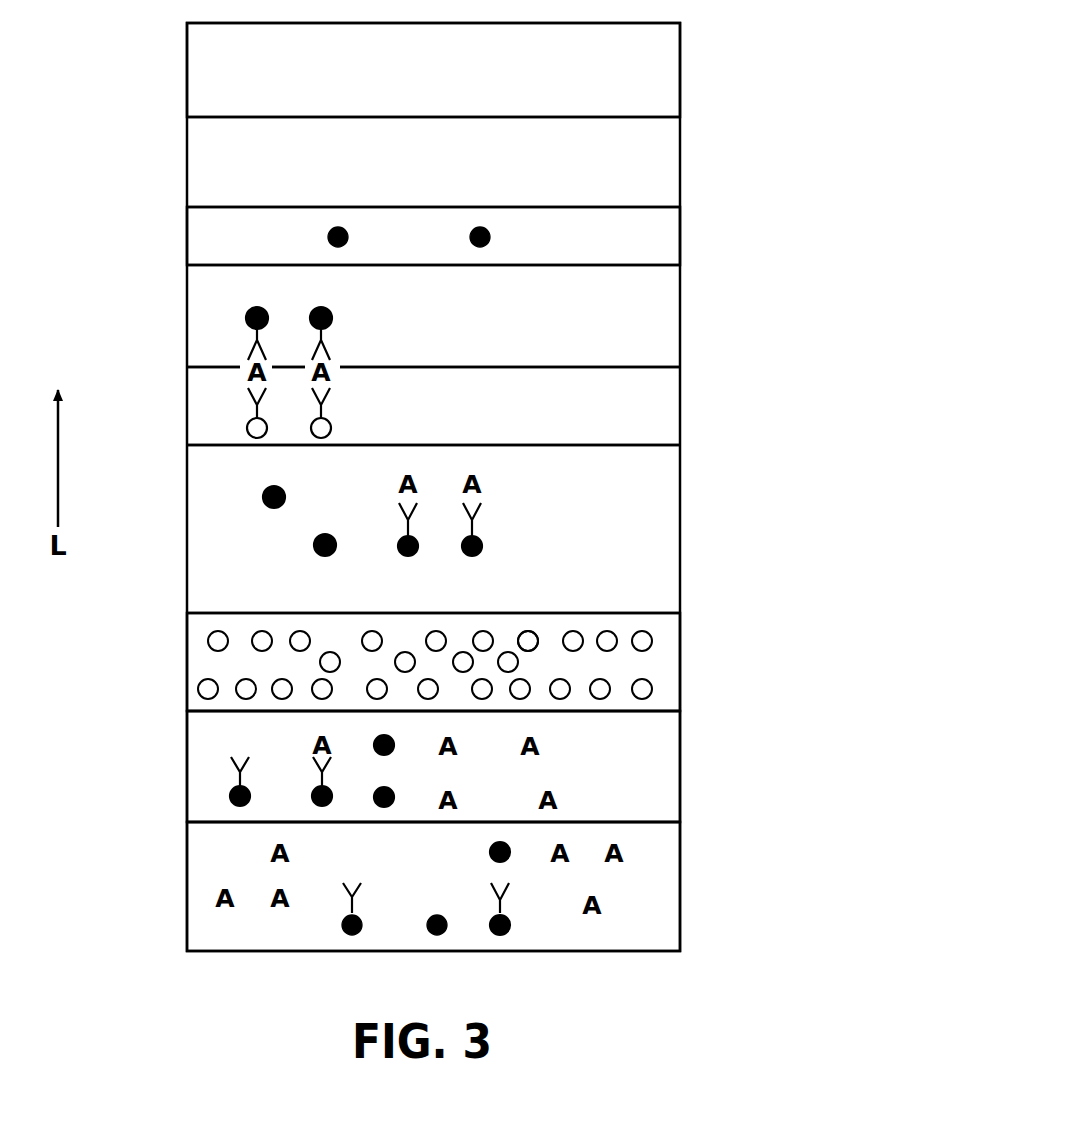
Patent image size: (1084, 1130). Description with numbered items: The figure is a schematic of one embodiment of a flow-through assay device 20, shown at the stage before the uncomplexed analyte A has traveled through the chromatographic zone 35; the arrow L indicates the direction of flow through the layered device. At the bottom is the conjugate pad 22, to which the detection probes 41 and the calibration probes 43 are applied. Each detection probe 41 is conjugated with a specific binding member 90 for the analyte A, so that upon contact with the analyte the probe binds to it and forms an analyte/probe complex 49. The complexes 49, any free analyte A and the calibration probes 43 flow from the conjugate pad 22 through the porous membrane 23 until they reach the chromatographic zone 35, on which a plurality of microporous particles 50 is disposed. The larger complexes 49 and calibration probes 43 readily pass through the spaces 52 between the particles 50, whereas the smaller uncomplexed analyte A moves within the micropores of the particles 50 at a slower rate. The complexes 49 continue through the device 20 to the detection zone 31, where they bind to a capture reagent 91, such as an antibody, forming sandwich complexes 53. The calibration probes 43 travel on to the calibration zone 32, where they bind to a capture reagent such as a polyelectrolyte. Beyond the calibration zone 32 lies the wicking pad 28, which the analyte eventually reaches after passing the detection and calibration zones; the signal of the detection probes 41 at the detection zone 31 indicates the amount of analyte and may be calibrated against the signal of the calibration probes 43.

The flow-through assay device 20 is at (795, 480).
The wicking pad 28 is at (666, 71).
The calibration zone 32 is at (668, 238).
The calibration probes 43 is at (491, 237).
The detection zone 31 is at (668, 406).
The capture reagent 91 is at (248, 430).
The sandwich complexes 53 is at (336, 424).
The chromatographic zone 35 is at (668, 665).
The spaces 52 is at (553, 640).
The microporous particles 50 is at (245, 687).
The porous membrane 23 is at (668, 781).
The analyte/probe complexes 49 is at (255, 790).
The conjugate pad 22 is at (665, 899).
The specific binding member 90 is at (358, 888).
The detection probes 41 is at (363, 925).